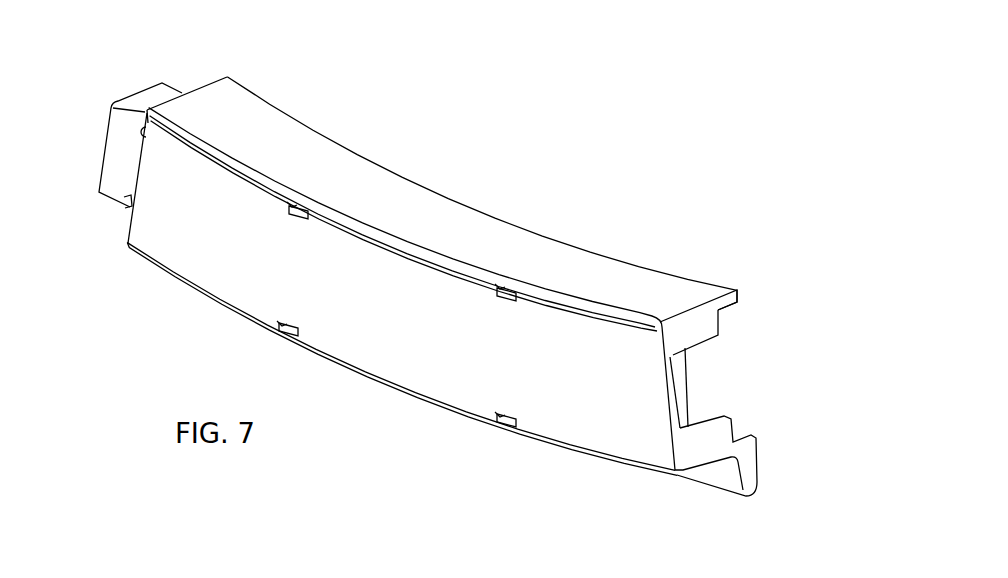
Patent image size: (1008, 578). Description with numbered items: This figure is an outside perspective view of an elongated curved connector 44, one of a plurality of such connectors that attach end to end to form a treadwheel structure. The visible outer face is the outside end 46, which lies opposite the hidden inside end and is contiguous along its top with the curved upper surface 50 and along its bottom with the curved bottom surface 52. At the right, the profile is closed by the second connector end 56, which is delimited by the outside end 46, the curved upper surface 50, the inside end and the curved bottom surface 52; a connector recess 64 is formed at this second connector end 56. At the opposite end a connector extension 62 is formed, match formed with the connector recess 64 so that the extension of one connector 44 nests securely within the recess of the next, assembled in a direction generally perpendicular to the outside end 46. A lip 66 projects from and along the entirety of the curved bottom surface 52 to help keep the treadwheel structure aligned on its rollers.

The connector 44 is at (643, 137).
The outside end 46 is at (447, 378).
The curved upper surface 50 is at (397, 192).
The curved bottom surface 52 is at (702, 465).
The second connector end 56 is at (707, 327).
The connector extension 62 is at (115, 158).
The connector recess 64 is at (702, 382).
The lip 66 is at (752, 483).